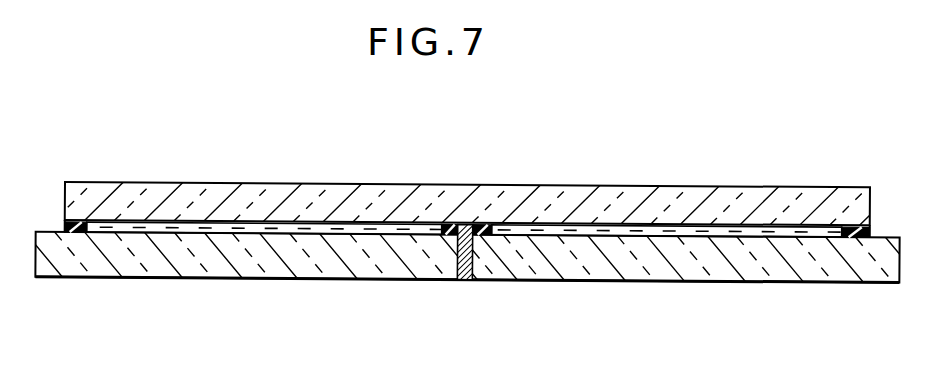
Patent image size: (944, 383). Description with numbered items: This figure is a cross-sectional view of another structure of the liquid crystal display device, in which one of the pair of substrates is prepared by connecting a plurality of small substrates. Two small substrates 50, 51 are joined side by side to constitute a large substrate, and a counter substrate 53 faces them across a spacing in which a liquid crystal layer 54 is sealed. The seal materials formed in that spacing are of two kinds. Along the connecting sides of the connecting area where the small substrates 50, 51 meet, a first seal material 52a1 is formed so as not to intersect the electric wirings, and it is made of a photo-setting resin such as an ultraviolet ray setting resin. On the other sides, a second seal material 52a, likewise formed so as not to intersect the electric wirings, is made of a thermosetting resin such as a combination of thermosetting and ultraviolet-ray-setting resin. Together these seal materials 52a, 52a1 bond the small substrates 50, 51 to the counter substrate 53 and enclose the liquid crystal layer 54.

The small substrate 50 is at (133, 278).
The small substrate 51 is at (783, 283).
The second seal material 52a is at (67, 230).
The first seal material 52a1 is at (488, 226).
The counter substrate 53 is at (672, 198).
The liquid crystal layer 54 is at (234, 227).